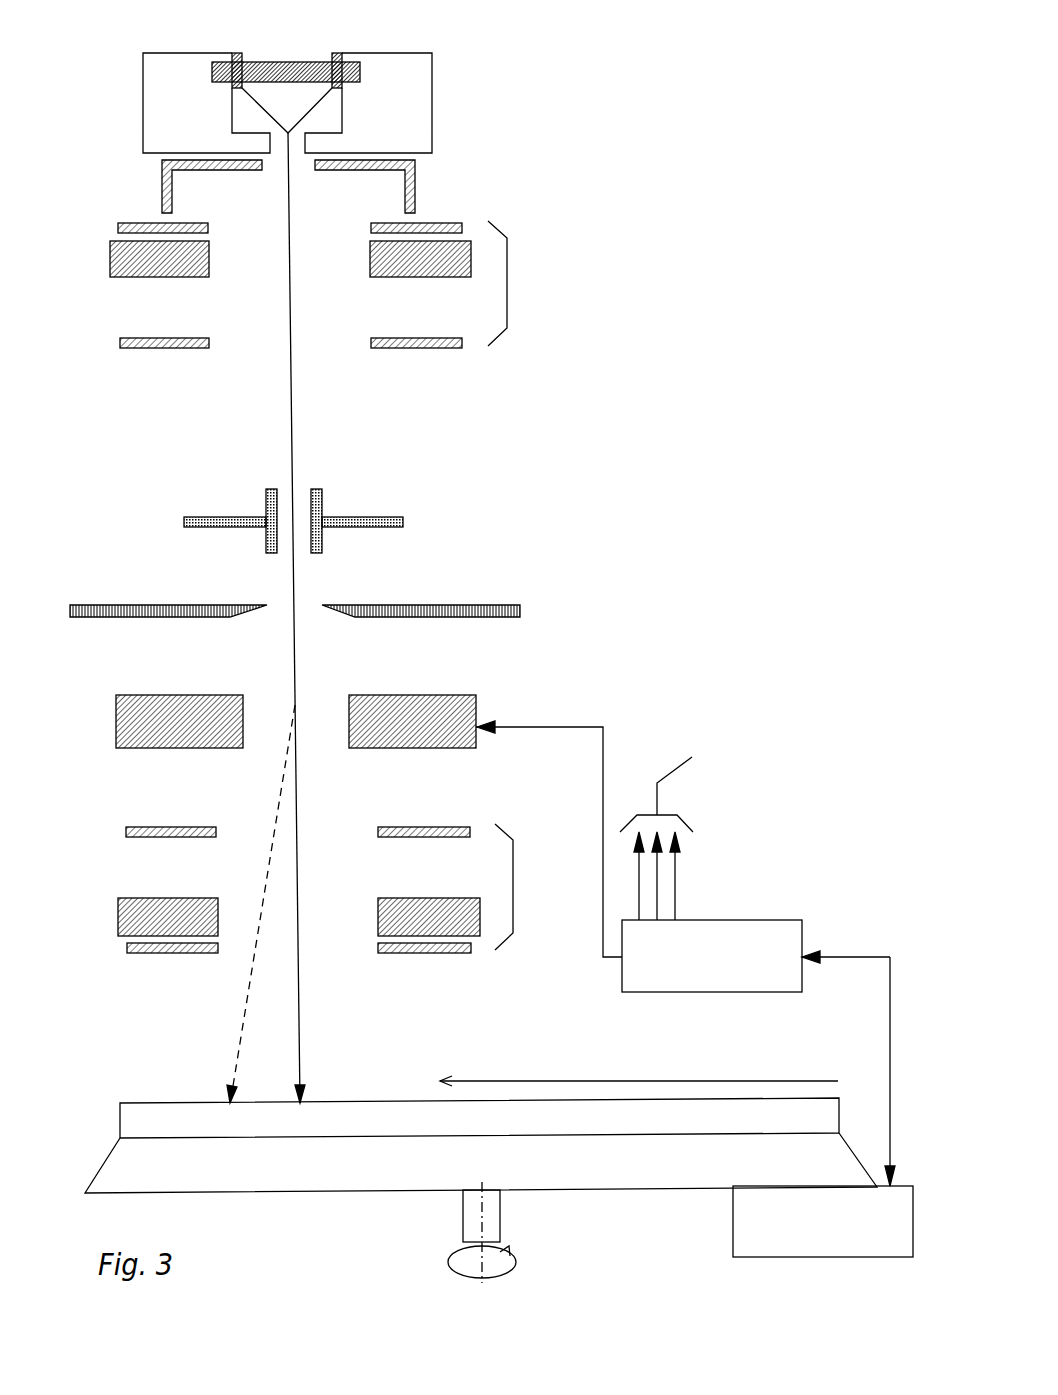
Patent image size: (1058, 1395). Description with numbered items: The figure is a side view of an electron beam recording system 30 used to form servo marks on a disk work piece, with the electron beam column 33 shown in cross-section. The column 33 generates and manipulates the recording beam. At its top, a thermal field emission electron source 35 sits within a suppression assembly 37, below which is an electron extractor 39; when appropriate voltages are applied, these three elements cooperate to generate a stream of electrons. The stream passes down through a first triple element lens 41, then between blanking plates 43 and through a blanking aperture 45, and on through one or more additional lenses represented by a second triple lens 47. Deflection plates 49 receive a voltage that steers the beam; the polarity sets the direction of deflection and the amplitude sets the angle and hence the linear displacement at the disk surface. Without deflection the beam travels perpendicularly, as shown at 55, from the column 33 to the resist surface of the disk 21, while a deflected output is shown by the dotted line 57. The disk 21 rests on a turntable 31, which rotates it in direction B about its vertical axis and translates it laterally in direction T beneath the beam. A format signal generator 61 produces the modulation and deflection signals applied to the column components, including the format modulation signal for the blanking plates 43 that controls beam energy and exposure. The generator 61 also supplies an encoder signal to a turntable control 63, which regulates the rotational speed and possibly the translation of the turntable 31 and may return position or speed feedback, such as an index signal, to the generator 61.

The electron beam recording system 30 is at (808, 120).
The electron beam column 33 is at (477, 115).
The thermal field emission electron source 35 is at (268, 62).
The suppression assembly 37 is at (143, 107).
The electron extractor 39 is at (415, 175).
The first triple element lens 41 is at (507, 281).
The blanking plates 43 is at (368, 515).
The blanking aperture 45 is at (493, 603).
The second triple lens 47 is at (513, 887).
The deflection plates 49 is at (477, 709).
The undeflected beam 55 is at (303, 1072).
The deflected beam output 57 is at (235, 1053).
The format signal generator 61 is at (787, 920).
The disk 21 is at (147, 1103).
The turntable 31 is at (335, 1193).
The turntable control 63 is at (733, 1203).